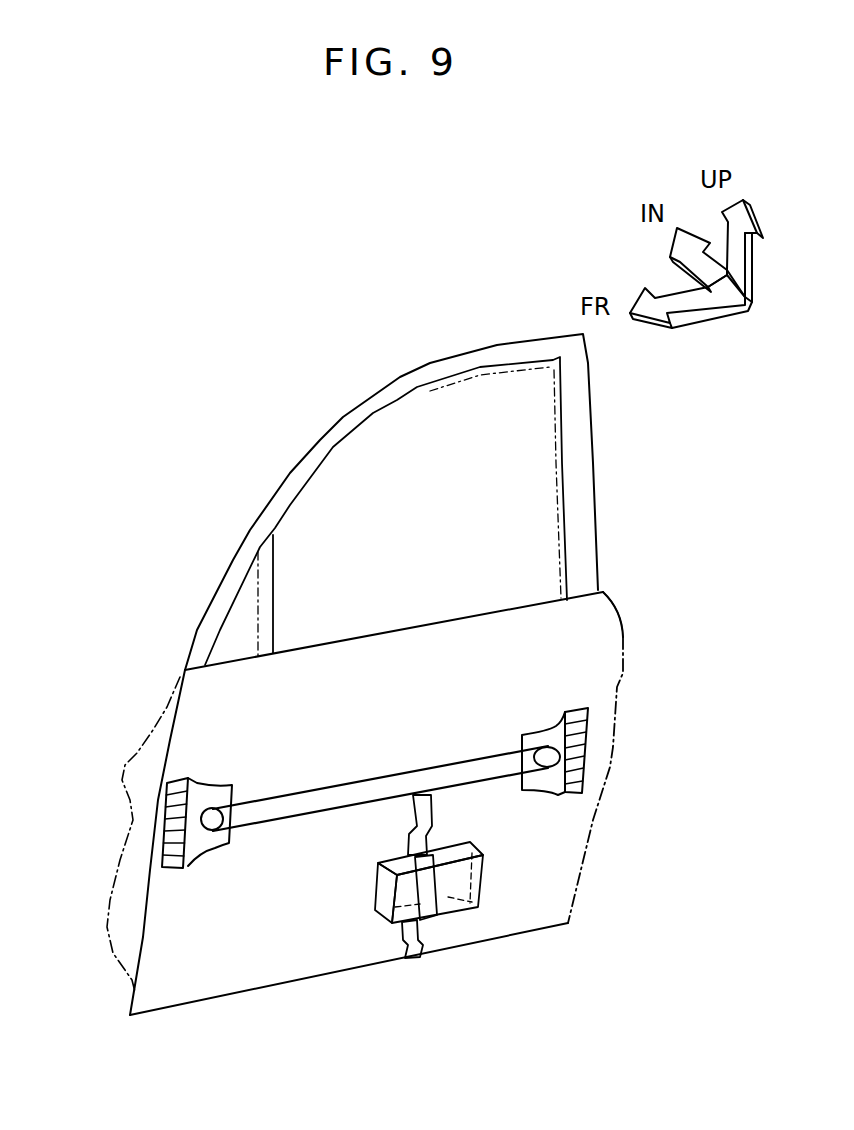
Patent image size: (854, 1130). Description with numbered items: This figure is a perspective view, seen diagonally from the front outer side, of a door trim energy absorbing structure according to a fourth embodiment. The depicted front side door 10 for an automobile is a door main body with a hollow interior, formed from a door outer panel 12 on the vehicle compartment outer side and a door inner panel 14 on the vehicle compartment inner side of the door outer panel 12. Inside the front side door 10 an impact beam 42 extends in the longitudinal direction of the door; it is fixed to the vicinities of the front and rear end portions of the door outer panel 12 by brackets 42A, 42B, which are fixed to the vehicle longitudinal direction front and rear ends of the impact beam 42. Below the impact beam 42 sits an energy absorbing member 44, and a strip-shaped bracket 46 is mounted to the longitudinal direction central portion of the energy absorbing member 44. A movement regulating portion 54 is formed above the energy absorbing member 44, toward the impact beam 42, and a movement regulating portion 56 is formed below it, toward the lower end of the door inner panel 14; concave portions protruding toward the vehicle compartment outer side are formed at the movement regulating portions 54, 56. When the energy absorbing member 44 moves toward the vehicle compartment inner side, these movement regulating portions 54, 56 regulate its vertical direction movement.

The front side door 10 is at (628, 600).
The door outer panel 12 is at (627, 676).
The door inner panel 14 is at (127, 757).
The impact beam 42 is at (393, 778).
The bracket 42A is at (210, 795).
The bracket 42B is at (553, 733).
The energy absorbing member 44 is at (485, 873).
The strip-shaped bracket 46 is at (437, 888).
The movement regulating portion 54 is at (431, 812).
The movement regulating portion 56 is at (418, 945).